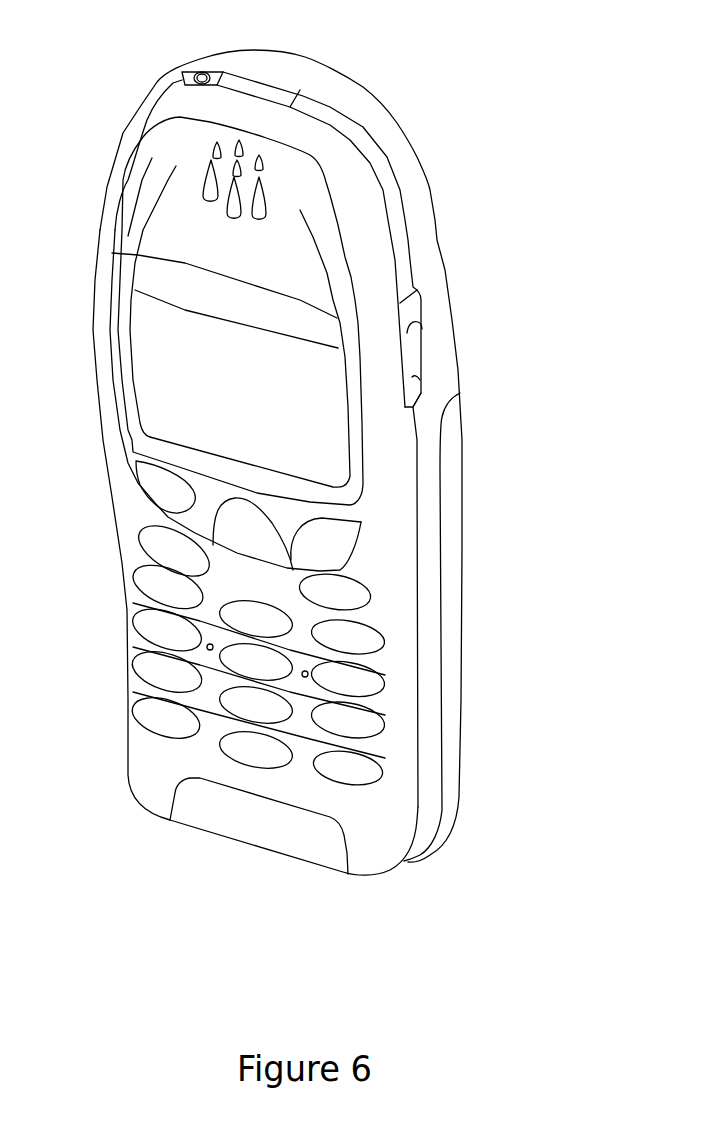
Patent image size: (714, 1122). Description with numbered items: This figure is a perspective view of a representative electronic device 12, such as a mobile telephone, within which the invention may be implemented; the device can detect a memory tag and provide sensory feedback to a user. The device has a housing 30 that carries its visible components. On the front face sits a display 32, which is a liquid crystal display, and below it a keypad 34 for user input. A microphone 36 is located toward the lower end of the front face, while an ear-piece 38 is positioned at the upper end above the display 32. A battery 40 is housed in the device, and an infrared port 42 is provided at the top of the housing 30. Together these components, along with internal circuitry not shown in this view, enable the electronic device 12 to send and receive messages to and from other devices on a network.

The electronic device 12 is at (397, 58).
The housing 30 is at (425, 216).
The display 32 is at (322, 435).
The keypad 34 is at (350, 777).
The microphone 36 is at (197, 812).
The ear-piece 38 is at (227, 172).
The battery 40 is at (453, 753).
The infrared port 42 is at (262, 84).